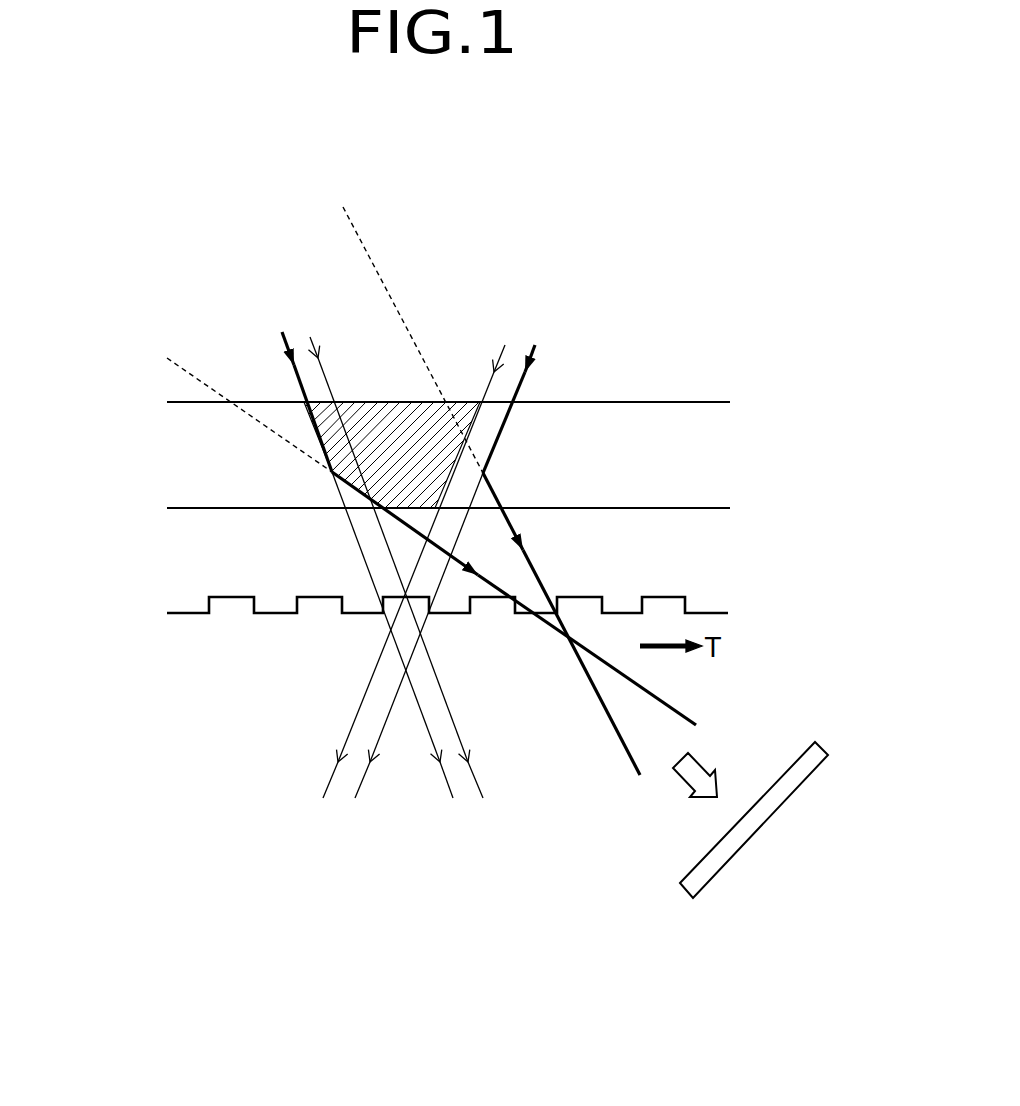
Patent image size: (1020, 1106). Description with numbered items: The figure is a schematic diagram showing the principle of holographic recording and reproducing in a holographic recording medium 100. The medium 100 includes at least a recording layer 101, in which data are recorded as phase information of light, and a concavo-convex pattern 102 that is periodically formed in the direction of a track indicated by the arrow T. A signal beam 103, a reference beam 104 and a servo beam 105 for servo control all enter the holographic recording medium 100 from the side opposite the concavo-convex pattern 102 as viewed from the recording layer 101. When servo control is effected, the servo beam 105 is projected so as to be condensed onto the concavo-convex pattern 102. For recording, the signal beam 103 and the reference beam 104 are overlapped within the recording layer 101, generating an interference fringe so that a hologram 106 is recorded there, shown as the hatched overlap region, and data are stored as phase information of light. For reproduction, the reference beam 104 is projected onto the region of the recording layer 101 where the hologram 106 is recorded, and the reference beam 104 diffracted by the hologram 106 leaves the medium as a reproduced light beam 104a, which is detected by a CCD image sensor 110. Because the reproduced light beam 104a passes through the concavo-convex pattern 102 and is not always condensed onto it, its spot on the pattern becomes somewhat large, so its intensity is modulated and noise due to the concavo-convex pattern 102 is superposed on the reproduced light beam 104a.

The holographic recording medium 100 is at (145, 398).
The recording layer 101 is at (753, 388).
The concavo-convex pattern 102 is at (707, 612).
The signal beam 103 is at (167, 358).
The reference beam 104 is at (288, 352).
The reproduced light beam 104a is at (617, 725).
The servo beam 105 is at (312, 337).
The hologram 106 is at (390, 403).
The CCD image sensor 110 is at (757, 837).